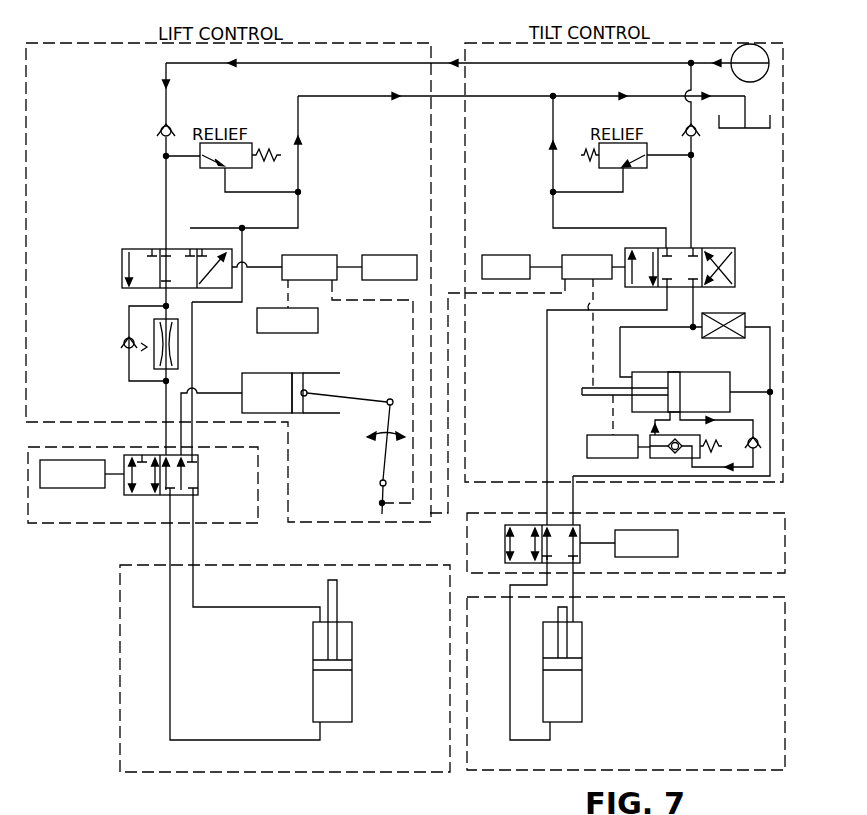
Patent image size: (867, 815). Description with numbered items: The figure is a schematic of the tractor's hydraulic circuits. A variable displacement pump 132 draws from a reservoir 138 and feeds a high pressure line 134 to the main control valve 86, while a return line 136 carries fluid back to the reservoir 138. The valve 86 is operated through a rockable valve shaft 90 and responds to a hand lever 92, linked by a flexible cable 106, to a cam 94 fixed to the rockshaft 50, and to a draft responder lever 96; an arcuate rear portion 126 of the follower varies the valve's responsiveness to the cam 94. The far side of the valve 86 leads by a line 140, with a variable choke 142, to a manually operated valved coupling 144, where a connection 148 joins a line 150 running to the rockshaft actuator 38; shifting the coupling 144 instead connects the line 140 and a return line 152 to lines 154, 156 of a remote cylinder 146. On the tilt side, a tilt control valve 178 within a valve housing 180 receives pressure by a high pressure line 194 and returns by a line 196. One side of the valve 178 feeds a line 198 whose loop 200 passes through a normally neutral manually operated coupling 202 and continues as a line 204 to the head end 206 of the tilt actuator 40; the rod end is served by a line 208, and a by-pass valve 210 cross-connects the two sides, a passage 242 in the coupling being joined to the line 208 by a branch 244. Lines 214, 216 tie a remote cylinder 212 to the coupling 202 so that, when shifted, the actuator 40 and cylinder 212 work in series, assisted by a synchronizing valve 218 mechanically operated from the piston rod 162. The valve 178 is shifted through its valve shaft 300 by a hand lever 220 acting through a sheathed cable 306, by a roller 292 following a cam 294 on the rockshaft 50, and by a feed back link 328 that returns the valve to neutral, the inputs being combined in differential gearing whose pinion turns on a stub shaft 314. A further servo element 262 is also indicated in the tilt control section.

The variable displacement pump 132 is at (762, 24).
The high pressure line 134 is at (566, 62).
The return line 136 is at (350, 100).
The reservoir 138 is at (749, 130).
The high pressure line 194 is at (692, 189).
The line 196 is at (553, 212).
The tilt control valve 178 is at (740, 230).
The main control valve 86 is at (122, 270).
The rockable valve shaft 90 is at (250, 267).
The arcuate rear portion of the follower 126 is at (323, 244).
The flexible cable 106 is at (347, 262).
The hand lever 92 is at (399, 253).
The hand lever 220 is at (514, 253).
The sheathed cable 306 is at (541, 263).
The tilt servo 262 is at (604, 254).
The valve shaft 300 is at (624, 275).
The variable choke 142 is at (165, 306).
The line 140 is at (165, 400).
The return line 152 is at (193, 360).
The line 150 is at (225, 393).
The rockshaft actuator 38 is at (289, 372).
The rockshaft 50 is at (380, 488).
The cam 294 is at (382, 514).
The draft responder lever 96 is at (318, 321).
The cam 94 is at (410, 302).
The roller 292 is at (520, 298).
The feed back link 328 is at (591, 344).
The line 198 is at (547, 368).
The line 208 is at (667, 330).
The branch 244 is at (694, 331).
The by-pass valve 210 is at (756, 304).
The passage 242 is at (770, 366).
The end of the actuator 206 is at (747, 394).
The tilt actuator 40 is at (674, 368).
The piston rod 162 is at (600, 396).
The line 204 is at (586, 480).
The synchronizing valve 218 is at (678, 458).
The connection 148 is at (176, 462).
The manually operated valved coupling 144 is at (146, 495).
The line 154 is at (167, 546).
The line 156 is at (195, 546).
The remote cylinder 146 is at (352, 698).
The manually operated coupling 202 is at (505, 557).
The loop 200 is at (572, 540).
The line 216 is at (577, 613).
The line 214 is at (520, 742).
The remote cylinder 212 is at (582, 693).
The valve housing 180 is at (235, 811).
The stub shaft 314 is at (296, 811).